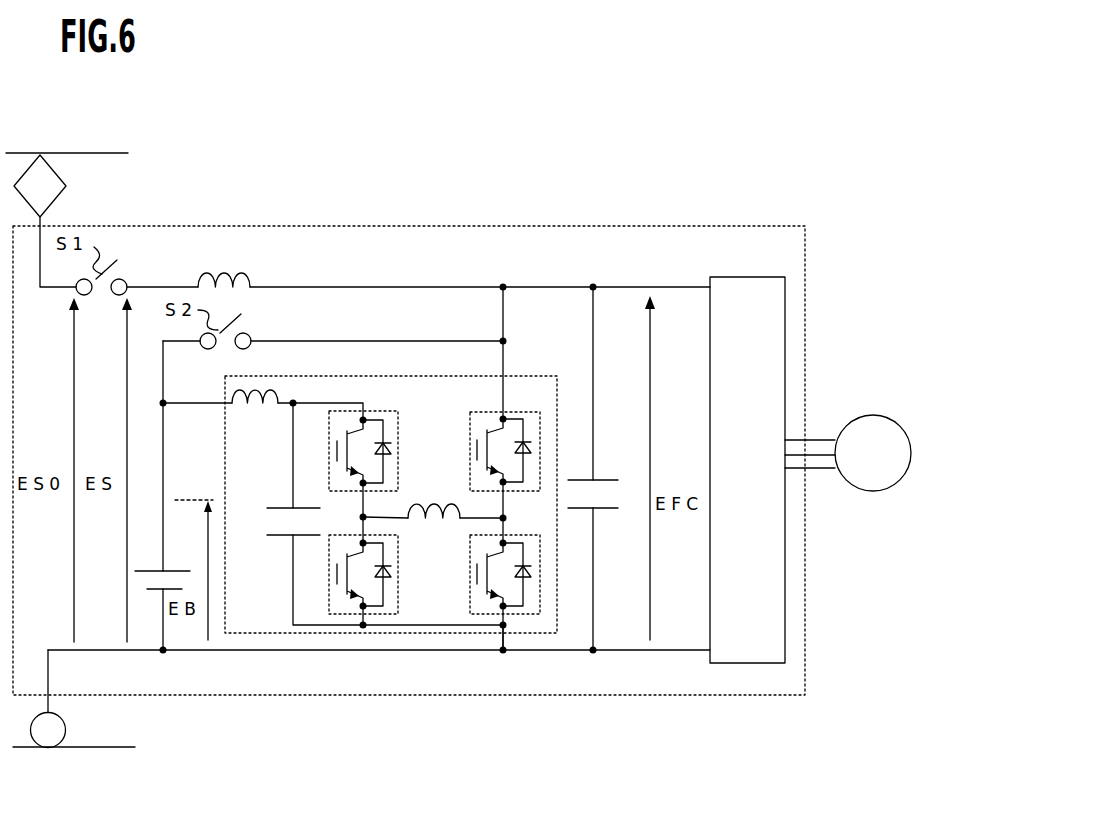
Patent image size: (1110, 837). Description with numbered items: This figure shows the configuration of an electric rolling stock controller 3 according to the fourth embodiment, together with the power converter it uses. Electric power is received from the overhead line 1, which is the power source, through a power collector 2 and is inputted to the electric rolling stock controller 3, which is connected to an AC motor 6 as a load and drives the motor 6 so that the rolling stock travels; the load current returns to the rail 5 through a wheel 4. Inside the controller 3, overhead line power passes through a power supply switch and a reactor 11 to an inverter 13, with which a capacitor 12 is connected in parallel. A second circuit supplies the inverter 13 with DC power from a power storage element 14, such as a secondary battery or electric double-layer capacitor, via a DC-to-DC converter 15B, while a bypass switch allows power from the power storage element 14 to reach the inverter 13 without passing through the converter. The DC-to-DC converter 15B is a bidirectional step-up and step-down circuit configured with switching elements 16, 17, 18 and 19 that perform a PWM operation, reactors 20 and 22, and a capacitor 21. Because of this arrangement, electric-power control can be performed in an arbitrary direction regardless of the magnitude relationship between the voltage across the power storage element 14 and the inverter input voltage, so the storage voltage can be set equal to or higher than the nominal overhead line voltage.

The overhead line 1 is at (76, 153).
The power collector 2 is at (55, 200).
The electric rolling stock controller 3 is at (452, 225).
The wheel 4 is at (65, 727).
The rail 5 is at (117, 747).
The motor 6 is at (868, 418).
The reactor 11 is at (242, 243).
The capacitor 12 is at (612, 480).
The inverter 13 is at (740, 277).
The power storage element 14 is at (183, 571).
The DC-to-DC converter 15B is at (403, 370).
The switching element 16 is at (533, 412).
The switching element 17 is at (533, 536).
The switching element 18 is at (398, 427).
The switching element 19 is at (398, 602).
The reactor 20 is at (440, 498).
The capacitor 21 is at (320, 508).
The reactor 22 is at (257, 403).